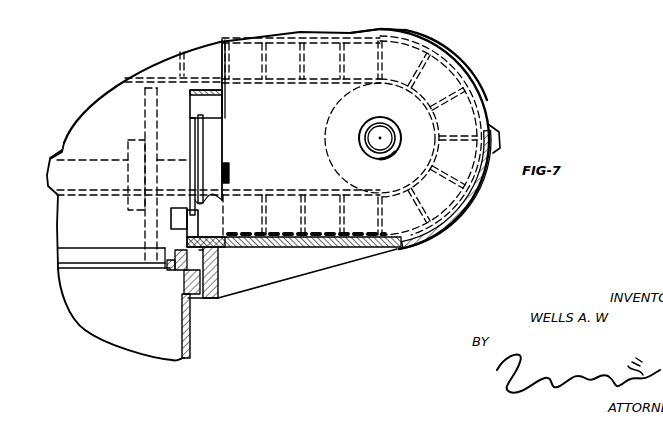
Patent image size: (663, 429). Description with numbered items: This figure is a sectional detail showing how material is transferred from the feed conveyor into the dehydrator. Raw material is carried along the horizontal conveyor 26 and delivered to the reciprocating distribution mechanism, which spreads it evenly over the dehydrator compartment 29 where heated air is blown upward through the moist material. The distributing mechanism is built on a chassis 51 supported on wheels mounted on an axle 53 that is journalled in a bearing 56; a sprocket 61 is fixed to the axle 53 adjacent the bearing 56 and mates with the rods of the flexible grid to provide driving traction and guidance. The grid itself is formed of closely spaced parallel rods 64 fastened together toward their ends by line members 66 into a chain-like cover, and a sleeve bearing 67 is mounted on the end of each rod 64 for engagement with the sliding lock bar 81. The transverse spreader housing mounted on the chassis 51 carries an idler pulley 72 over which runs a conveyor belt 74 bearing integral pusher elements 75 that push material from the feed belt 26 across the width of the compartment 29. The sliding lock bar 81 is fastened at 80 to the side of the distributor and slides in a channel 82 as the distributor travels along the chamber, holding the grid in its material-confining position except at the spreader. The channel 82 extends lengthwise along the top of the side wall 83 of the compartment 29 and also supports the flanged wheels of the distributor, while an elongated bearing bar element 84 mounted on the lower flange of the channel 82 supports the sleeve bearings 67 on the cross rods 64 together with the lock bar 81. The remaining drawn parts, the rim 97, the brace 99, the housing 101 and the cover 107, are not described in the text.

The horizontal conveyor 26 is at (336, 249).
The dehydrator compartment 29 is at (110, 326).
The chassis 51 is at (223, 97).
The axle 53 is at (56, 160).
The bearing 56 is at (220, 137).
The sprocket 61 is at (145, 107).
The parallel rod 64 is at (68, 266).
The line member 66 is at (162, 273).
The sleeve bearing 67 is at (183, 278).
The idler pulley 72 is at (338, 103).
The conveyor belt 74 is at (381, 212).
The pusher element 75 is at (402, 31).
The fastening 80 is at (170, 218).
The sliding lock bar 81 is at (210, 277).
The channel 82 is at (219, 262).
The side wall 83 is at (190, 354).
The bearing bar element 84 is at (200, 300).
The rim flange 97 is at (463, 204).
The brace 99 is at (297, 276).
The housing 101 is at (304, 153).
The cover 107 is at (458, 68).